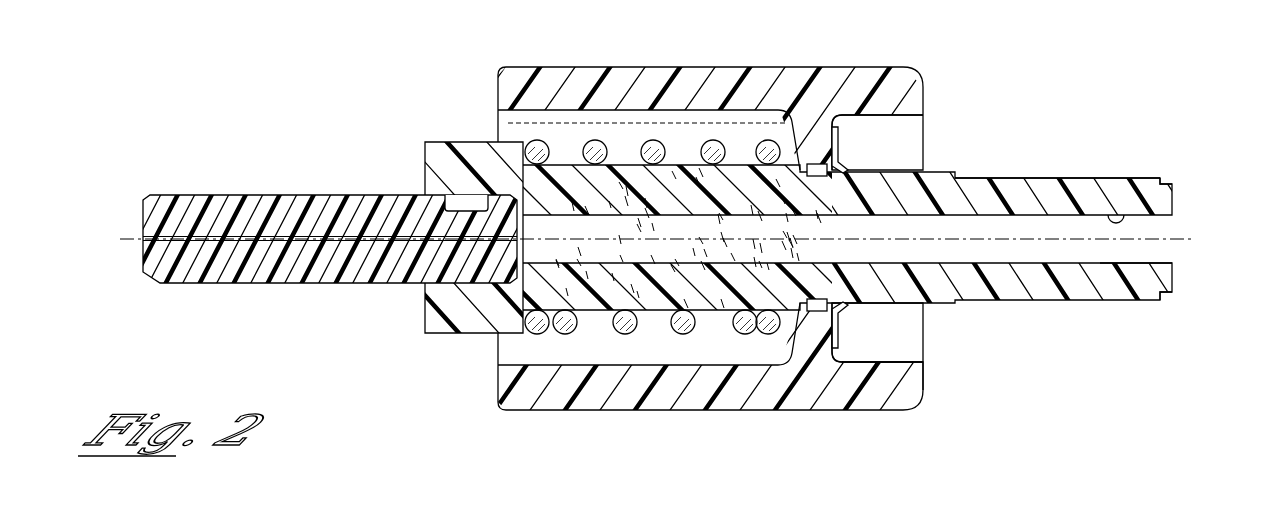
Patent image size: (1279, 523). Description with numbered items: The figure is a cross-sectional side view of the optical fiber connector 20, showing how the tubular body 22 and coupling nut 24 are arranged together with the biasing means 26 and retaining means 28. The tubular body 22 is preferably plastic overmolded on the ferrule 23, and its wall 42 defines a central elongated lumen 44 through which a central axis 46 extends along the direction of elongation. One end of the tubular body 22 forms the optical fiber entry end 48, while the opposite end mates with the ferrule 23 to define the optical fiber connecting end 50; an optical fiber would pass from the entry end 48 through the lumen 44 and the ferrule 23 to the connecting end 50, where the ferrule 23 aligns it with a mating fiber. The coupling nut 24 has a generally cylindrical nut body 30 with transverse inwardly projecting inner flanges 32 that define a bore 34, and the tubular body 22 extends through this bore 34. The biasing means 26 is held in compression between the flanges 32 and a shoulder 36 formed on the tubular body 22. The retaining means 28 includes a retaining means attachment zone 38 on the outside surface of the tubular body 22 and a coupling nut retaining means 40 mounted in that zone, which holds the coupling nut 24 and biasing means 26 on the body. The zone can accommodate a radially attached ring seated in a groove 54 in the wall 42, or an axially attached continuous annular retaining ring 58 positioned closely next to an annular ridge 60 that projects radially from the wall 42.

The optical fiber connector 20 is at (960, 64).
The tubular body 22 is at (1016, 168).
The ferrule 23 is at (322, 193).
The coupling nut 24 is at (915, 403).
The biasing means 26 is at (685, 335).
The retaining means 28 is at (857, 353).
The nut body 30 is at (613, 82).
The inner flanges 32 is at (793, 133).
The bore 34 is at (758, 178).
The shoulder 36 is at (470, 142).
The retaining means attachment zone 38 is at (862, 327).
The coupling nut retaining means 40 is at (857, 122).
The wall 42 is at (1077, 200).
The lumen 44 is at (1117, 217).
The central axis 46 is at (1117, 242).
The optical fiber entry end 48 is at (1172, 183).
The optical fiber connecting end 50 is at (143, 258).
The groove 54 is at (813, 308).
The retaining ring 58 is at (840, 150).
The annular ridge 60 is at (832, 297).